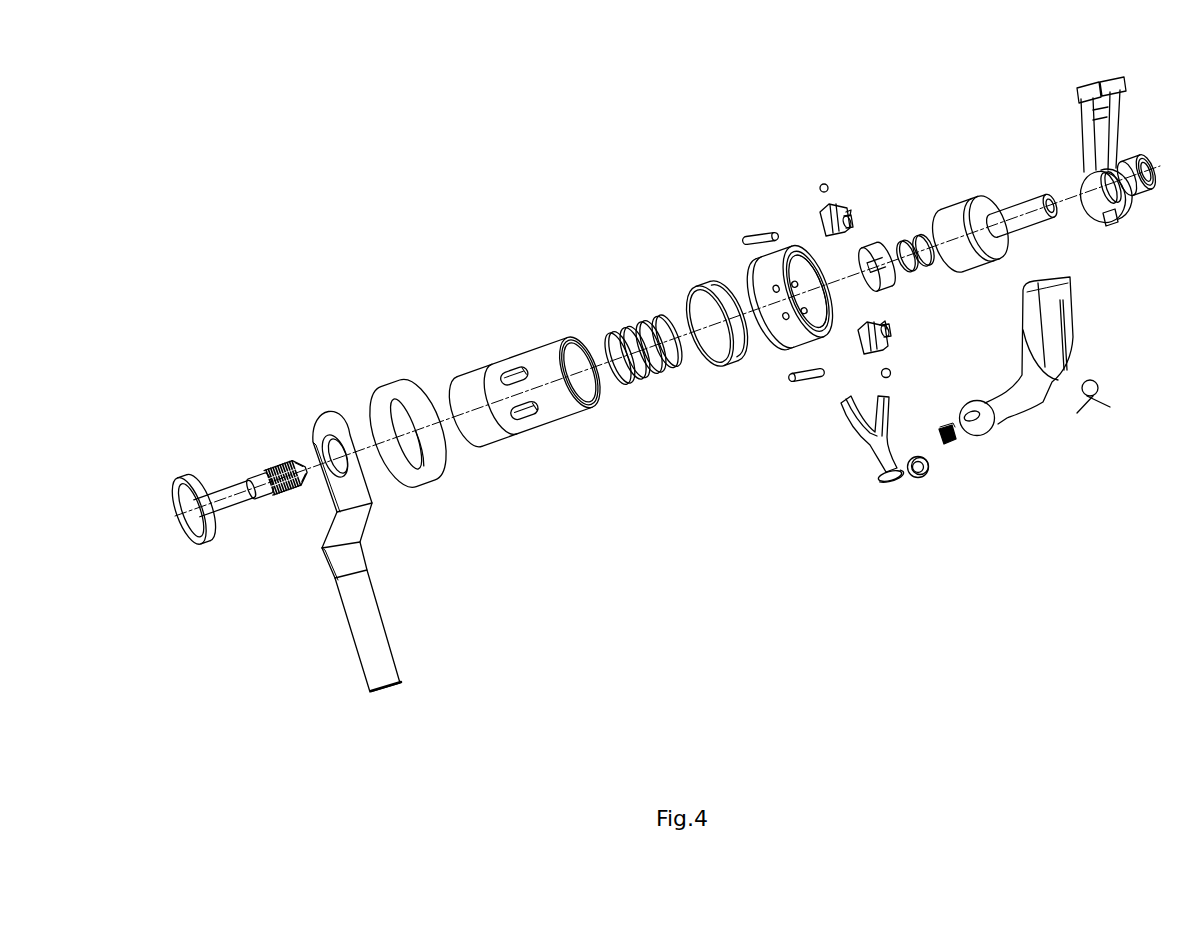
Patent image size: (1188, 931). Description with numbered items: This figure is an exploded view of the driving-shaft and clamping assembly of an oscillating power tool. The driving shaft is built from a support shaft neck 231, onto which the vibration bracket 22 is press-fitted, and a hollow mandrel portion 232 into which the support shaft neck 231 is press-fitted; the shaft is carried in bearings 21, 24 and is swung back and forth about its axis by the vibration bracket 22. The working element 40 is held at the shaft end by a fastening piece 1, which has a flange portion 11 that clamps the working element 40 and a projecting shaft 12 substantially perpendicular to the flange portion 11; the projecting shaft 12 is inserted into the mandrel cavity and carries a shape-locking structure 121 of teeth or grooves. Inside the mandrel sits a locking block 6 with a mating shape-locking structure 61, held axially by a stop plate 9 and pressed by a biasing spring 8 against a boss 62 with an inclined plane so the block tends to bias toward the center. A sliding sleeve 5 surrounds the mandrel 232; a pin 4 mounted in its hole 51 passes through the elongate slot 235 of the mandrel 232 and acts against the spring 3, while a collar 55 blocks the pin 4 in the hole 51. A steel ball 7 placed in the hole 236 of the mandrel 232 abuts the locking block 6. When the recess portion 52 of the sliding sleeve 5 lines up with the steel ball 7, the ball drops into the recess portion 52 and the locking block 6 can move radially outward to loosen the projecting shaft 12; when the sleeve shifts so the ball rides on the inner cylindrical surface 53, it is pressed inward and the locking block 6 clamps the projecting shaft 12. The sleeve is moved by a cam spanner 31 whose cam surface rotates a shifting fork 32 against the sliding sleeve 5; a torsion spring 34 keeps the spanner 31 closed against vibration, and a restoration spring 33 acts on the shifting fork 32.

The fastening piece 1 is at (267, 522).
The flange portion 11 is at (212, 533).
The projecting shaft 12 is at (247, 497).
The shape-locking structure 121 is at (290, 485).
The working element 40 is at (332, 425).
The bearing 24 is at (393, 402).
The hollow mandrel portion 232 is at (536, 409).
The elongate slot 235 is at (530, 413).
The hole 236 is at (560, 422).
The spring 3 is at (625, 340).
The collar 55 is at (700, 292).
The sliding sleeve 5 is at (800, 320).
The hole 51 is at (759, 292).
The recess portion 52 is at (813, 273).
The inner cylindrical surface 53 is at (828, 322).
The pin 4 is at (758, 236).
The locking block 6 is at (887, 259).
The shape-locking structure 61 is at (848, 226).
The boss 62 is at (849, 218).
The steel ball 7 is at (825, 184).
The stop plate 9 is at (881, 293).
The biasing spring 8 is at (905, 240).
The support shaft neck 231 is at (1003, 224).
The vibration bracket 22 is at (1118, 217).
The bearing 21 is at (1135, 190).
The shifting fork 32 is at (872, 445).
The restoration spring 33 is at (952, 445).
The cam spanner 31 is at (1010, 408).
The torsion spring 34 is at (1093, 403).